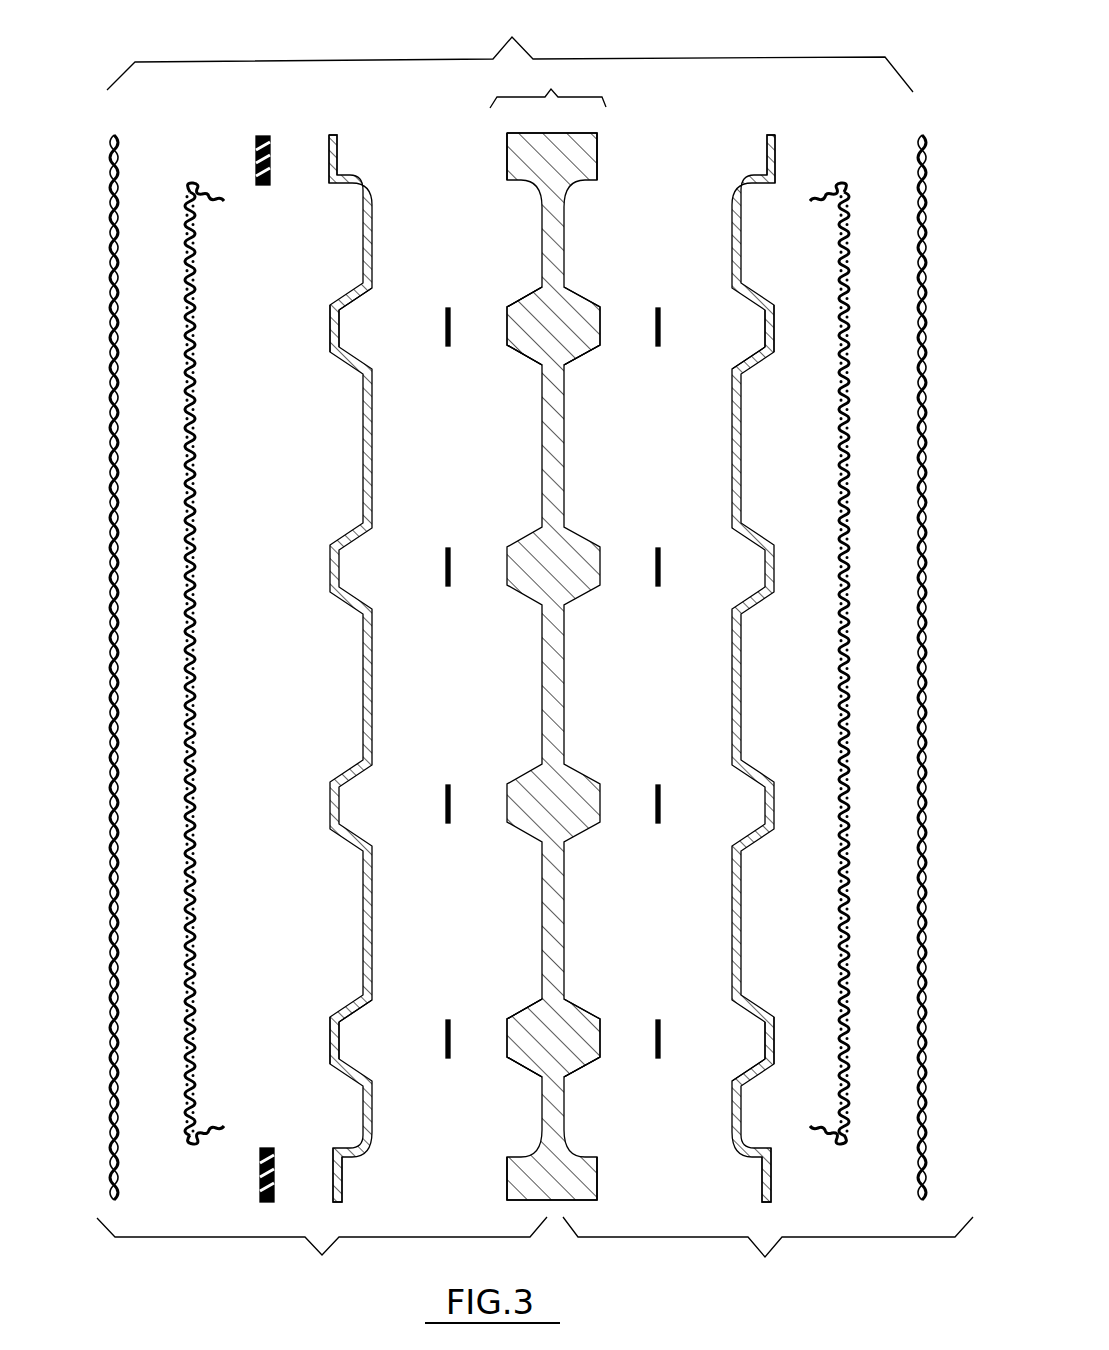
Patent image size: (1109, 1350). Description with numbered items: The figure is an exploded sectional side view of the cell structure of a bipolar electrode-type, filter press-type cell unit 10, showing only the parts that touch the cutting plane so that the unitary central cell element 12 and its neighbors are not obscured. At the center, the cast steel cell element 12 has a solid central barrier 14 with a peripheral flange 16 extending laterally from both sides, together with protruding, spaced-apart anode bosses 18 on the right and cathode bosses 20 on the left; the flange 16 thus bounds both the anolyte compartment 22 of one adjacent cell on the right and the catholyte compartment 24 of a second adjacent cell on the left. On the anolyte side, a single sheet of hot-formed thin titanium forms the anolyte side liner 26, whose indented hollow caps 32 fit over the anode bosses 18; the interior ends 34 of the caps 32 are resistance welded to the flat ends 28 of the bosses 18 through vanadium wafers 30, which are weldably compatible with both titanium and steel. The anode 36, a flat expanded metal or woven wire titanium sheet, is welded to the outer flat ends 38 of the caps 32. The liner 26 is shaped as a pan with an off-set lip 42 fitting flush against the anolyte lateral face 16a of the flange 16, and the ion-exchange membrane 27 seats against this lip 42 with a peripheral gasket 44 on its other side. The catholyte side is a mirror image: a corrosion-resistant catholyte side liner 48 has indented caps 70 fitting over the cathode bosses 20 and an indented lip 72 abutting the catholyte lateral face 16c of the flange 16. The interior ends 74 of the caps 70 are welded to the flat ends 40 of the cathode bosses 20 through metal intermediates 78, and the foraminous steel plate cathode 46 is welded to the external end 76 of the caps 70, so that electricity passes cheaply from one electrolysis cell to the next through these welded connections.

The cell unit 10 is at (510, 46).
The unitary central cell element 12 is at (548, 83).
The central barrier 14 is at (553, 470).
The peripheral flange 16 is at (556, 150).
The anolyte side lateral face of flange 16a is at (596, 165).
The catholyte side lateral face of flange 16c is at (507, 168).
The anode bosses 18 is at (583, 332).
The cathode bosses 20 is at (528, 325).
The anolyte compartment 22 is at (768, 1256).
The catholyte compartment 24 is at (322, 1256).
The anolyte side liner 26 is at (741, 470).
The ion-exchange membrane 27 is at (113, 760).
The flat ends of anode bosses 28 is at (598, 335).
The vanadium wafers 30 is at (657, 328).
The indented hollow caps 32 is at (744, 360).
The interior ends of caps 34 is at (767, 330).
The anode 36 is at (847, 757).
The flat ends of indented caps 38 is at (773, 330).
The flat ends of cathode bosses 40 is at (510, 343).
The off-set lip 42 is at (766, 163).
The peripheral gasket 44 is at (256, 165).
The cathode 46 is at (193, 757).
The catholyte side liner 48 is at (364, 455).
The indented caps of catholyte side liner 70 is at (348, 300).
The indented lip 72 is at (337, 163).
The interior ends of catholyte liner caps 74 is at (340, 318).
The external end of caps 76 is at (331, 334).
The metal intermediates 78 is at (447, 328).